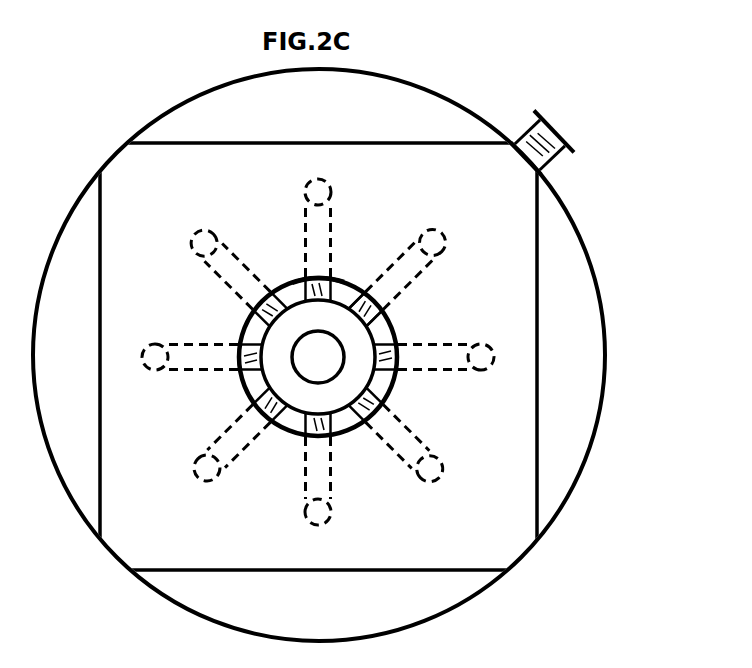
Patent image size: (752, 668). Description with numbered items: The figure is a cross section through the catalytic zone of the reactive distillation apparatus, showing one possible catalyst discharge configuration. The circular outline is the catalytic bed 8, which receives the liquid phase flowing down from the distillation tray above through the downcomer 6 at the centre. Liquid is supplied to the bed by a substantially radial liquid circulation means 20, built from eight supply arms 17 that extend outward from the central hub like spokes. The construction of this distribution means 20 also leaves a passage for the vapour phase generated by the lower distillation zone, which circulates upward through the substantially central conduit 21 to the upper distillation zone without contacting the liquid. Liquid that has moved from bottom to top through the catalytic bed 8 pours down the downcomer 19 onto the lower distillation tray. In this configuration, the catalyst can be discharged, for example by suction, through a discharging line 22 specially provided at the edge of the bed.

The downcomer 6 is at (331, 373).
The catalytic bed 8 is at (485, 212).
The supply arms 17 is at (316, 276).
The downcomer 19 is at (188, 118).
The radial liquid circulation means 20 is at (348, 292).
The conduit 21 is at (382, 328).
The discharging line 22 is at (560, 130).